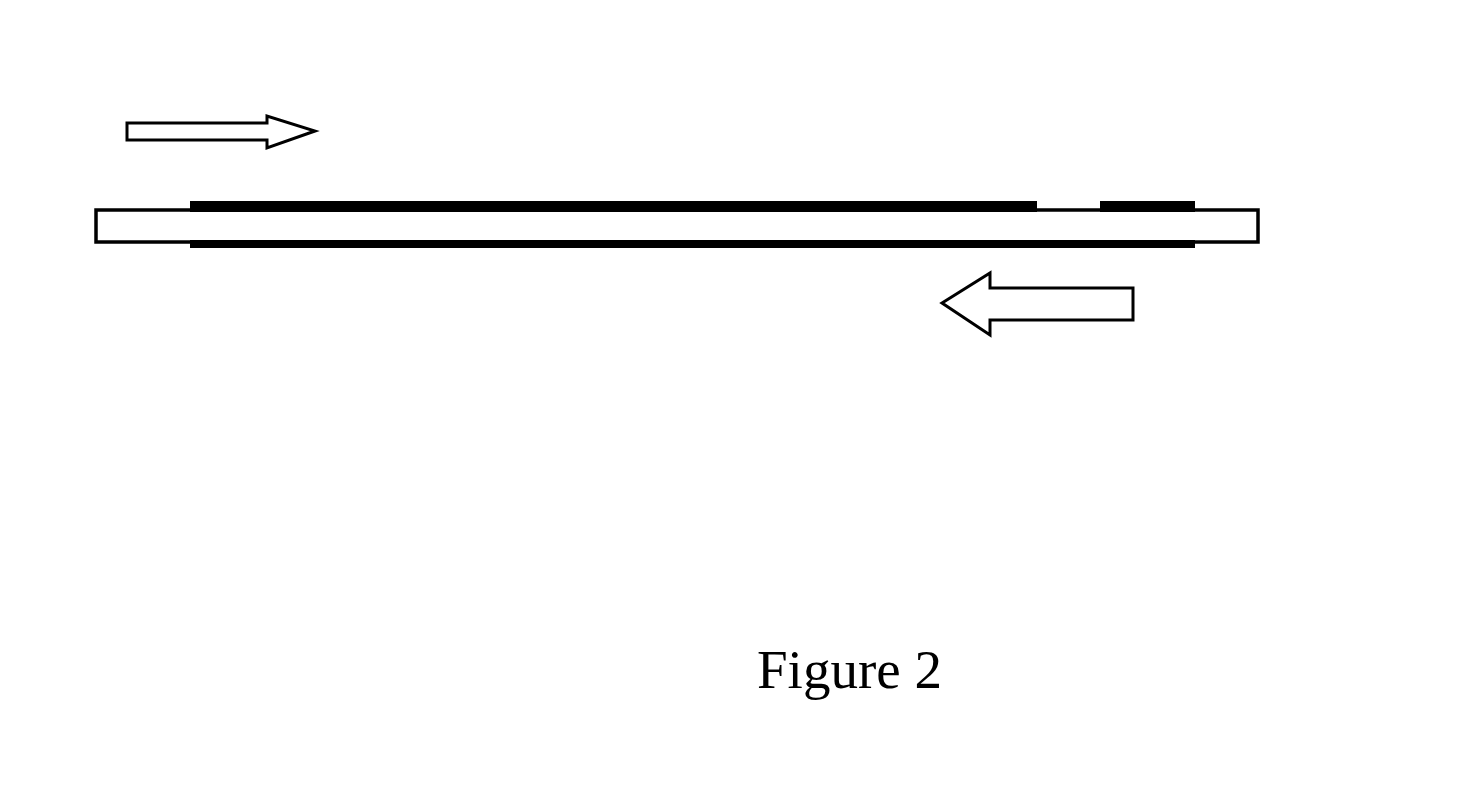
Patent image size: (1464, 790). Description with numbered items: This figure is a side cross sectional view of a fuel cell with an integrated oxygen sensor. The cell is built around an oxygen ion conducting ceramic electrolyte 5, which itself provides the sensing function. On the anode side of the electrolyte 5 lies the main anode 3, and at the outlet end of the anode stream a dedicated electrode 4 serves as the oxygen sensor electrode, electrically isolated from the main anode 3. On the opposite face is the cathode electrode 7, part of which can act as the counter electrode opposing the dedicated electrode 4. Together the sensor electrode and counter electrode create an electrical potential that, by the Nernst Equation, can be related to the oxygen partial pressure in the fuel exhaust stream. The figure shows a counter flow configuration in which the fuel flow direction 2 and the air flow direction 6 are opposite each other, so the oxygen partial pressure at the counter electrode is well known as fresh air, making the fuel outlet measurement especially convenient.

The fuel flow direction 2 is at (221, 93).
The main anode 3 is at (795, 197).
The dedicated electrode 4 is at (1158, 190).
The oxygen ion conducting ceramic electrolyte 5 is at (1268, 206).
The air flow direction 6 is at (1037, 333).
The cathode electrode 7 is at (330, 249).